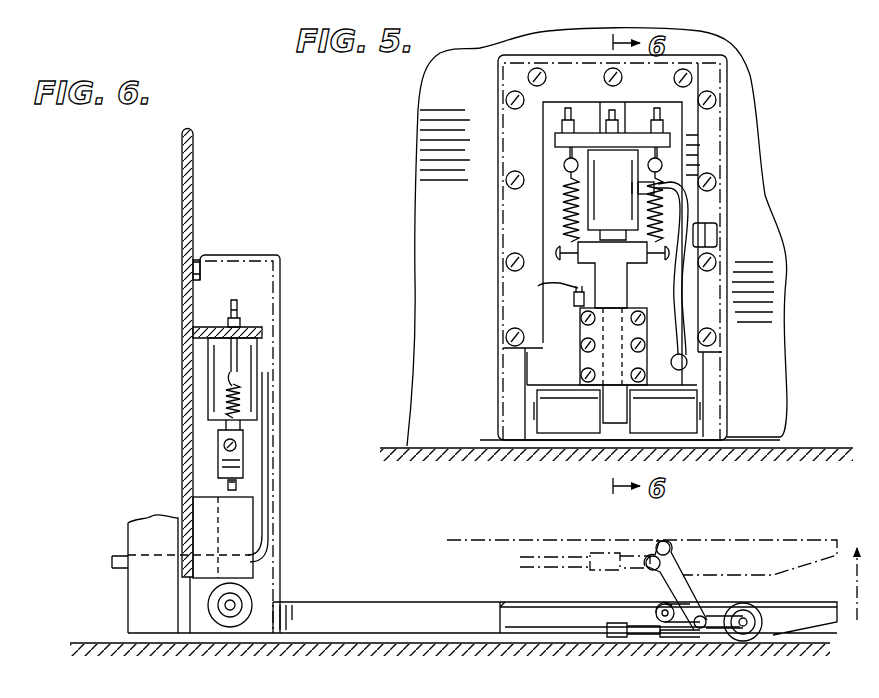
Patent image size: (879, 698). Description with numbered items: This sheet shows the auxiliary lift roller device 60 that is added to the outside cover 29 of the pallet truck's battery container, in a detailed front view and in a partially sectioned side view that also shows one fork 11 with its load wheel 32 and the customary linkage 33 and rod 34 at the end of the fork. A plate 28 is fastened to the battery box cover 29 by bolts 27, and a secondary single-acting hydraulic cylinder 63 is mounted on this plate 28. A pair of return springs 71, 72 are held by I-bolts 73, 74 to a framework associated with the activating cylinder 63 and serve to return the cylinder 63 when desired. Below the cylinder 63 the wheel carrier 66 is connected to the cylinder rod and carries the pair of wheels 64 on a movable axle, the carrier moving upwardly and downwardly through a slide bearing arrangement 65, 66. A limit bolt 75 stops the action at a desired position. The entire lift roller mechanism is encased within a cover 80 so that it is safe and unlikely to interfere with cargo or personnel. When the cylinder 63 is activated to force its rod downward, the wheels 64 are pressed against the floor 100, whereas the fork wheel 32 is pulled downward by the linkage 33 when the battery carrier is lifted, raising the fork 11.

In FIG. 6, the fork 11 is at (432, 622).
In FIG. 5, the bolts 27 is at (507, 100).
In FIG. 6, the bolts 27 is at (186, 270).
In FIG. 5, the plate 28 is at (708, 147).
In FIG. 6, the plate 28 is at (204, 286).
In FIG. 5, the outside cover of the battery container 29 is at (372, 238).
In FIG. 6, the outside cover of the battery container 29 is at (190, 188).
In FIG. 6, the fork wheel 32 is at (744, 642).
In FIG. 6, the link 33 is at (672, 638).
In FIG. 6, the rod 34 is at (620, 636).
In FIG. 5, the auxiliary device 60 is at (548, 238).
In FIG. 5, the secondary hydraulic cylinder 63 is at (604, 185).
In FIG. 6, the secondary hydraulic cylinder 63 is at (250, 357).
In FIG. 5, the wheels 64 is at (557, 420).
In FIG. 6, the wheels 64 is at (216, 618).
In FIG. 5, the slide bearing arrangement 65 is at (580, 357).
In FIG. 5, the wheel carrier 66 is at (590, 263).
In FIG. 6, the wheel carrier 66 is at (236, 606).
In FIG. 5, the spring 71 is at (570, 213).
In FIG. 6, the spring 71 is at (240, 406).
In FIG. 5, the spring 72 is at (663, 212).
In FIG. 5, the I-bolt 73 is at (553, 118).
In FIG. 6, the I-bolt 73 is at (248, 318).
In FIG. 5, the I-bolt 74 is at (662, 121).
In FIG. 5, the limit bolt 75 is at (570, 285).
In FIG. 6, the limit bolt 75 is at (233, 484).
In FIG. 6, the cover 80 is at (226, 254).
In FIG. 5, the floor 100 is at (400, 440).
In FIG. 6, the floor 100 is at (96, 640).